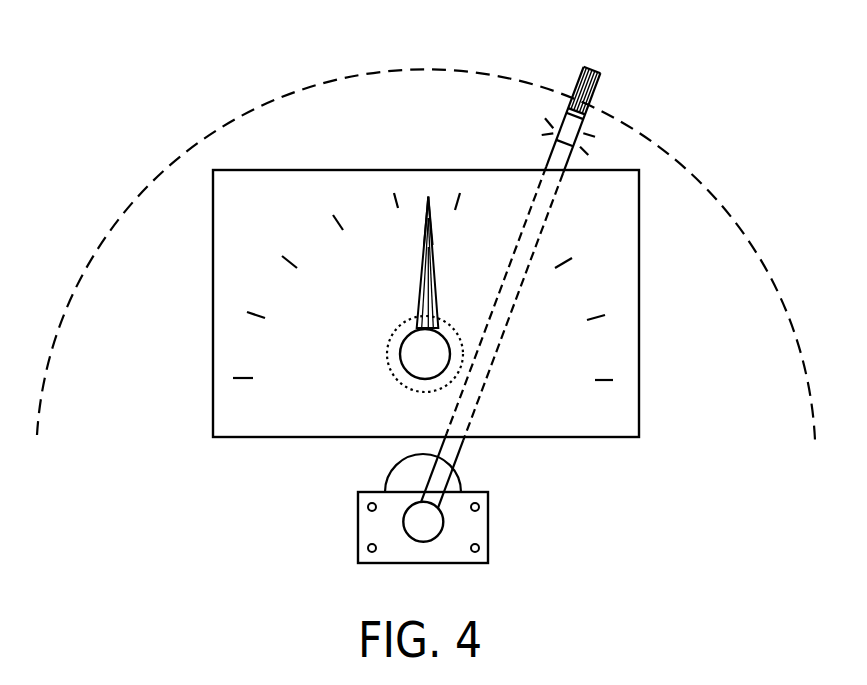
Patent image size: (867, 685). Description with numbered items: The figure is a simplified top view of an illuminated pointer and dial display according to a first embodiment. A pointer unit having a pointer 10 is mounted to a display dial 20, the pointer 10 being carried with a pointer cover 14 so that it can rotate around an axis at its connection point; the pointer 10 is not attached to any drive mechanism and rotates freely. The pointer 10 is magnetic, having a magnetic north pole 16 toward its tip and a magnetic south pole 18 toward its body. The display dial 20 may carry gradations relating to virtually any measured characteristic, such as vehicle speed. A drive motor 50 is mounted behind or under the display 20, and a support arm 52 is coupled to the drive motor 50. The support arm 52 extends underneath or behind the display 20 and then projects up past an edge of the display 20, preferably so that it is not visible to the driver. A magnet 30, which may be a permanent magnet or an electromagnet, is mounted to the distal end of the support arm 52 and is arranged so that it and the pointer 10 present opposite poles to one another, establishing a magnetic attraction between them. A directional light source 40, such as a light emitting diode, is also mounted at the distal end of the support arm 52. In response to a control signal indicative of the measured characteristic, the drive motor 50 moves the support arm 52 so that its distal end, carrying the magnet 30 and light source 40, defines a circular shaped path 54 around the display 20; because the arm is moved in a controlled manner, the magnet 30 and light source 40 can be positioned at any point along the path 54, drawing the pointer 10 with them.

The pointer 10 is at (402, 224).
The pointer cover 14 is at (383, 367).
The magnetic north pole 16 is at (433, 198).
The magnetic south pole 18 is at (438, 313).
The display dial 20 is at (257, 422).
The magnet 30 is at (573, 82).
The light source 40 is at (585, 128).
The drive motor 50 is at (492, 525).
The support arm 52 is at (482, 408).
The circular shaped path 54 is at (242, 115).